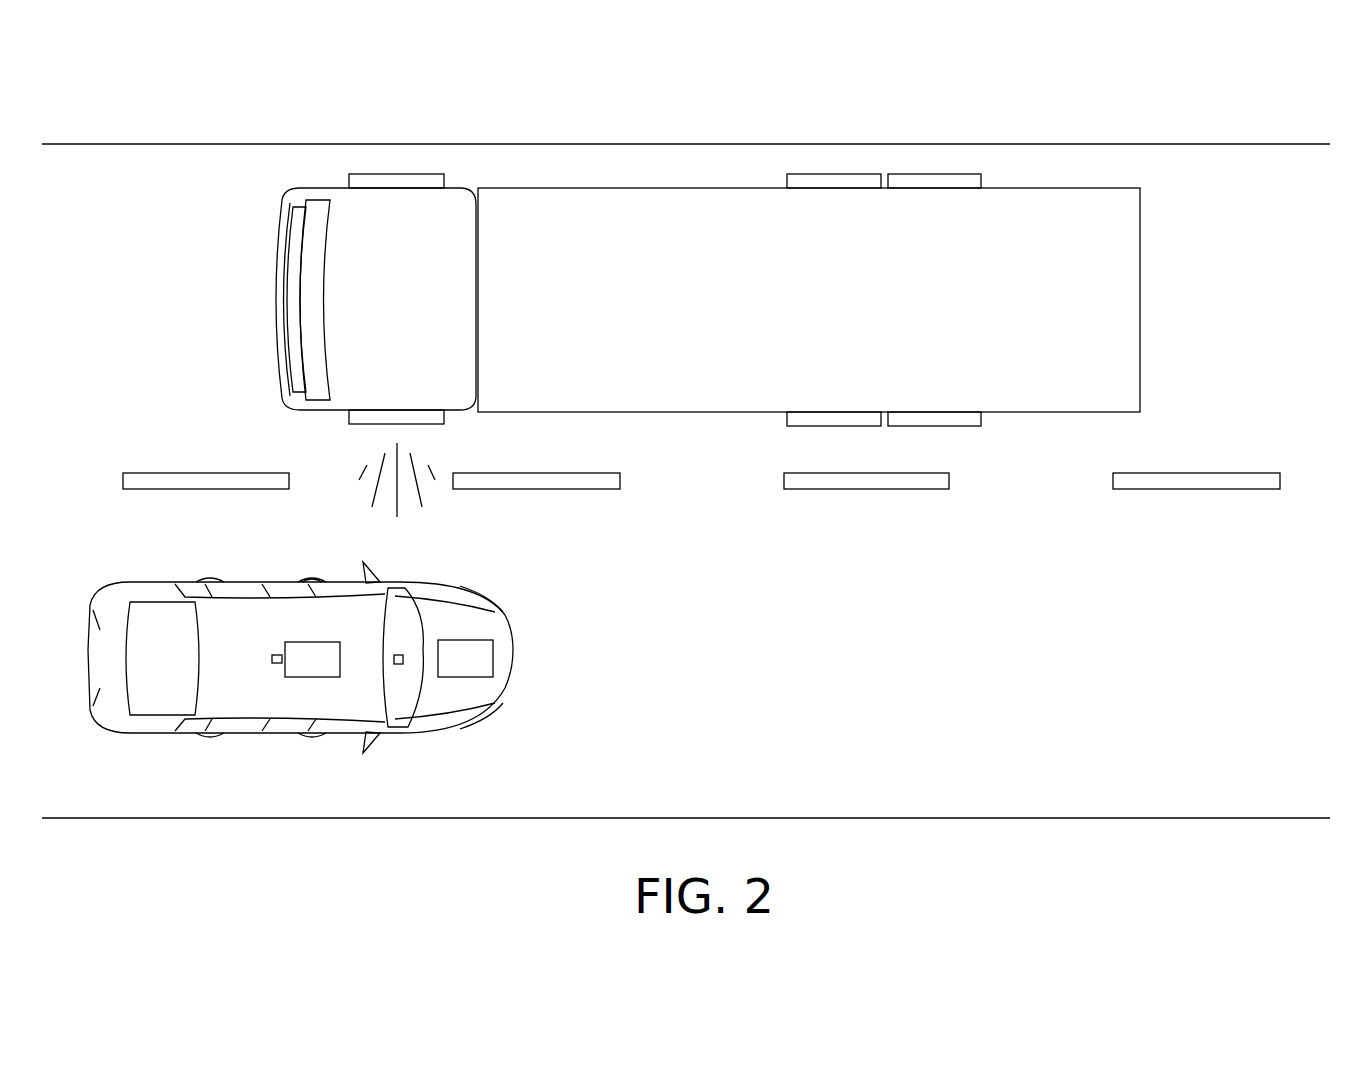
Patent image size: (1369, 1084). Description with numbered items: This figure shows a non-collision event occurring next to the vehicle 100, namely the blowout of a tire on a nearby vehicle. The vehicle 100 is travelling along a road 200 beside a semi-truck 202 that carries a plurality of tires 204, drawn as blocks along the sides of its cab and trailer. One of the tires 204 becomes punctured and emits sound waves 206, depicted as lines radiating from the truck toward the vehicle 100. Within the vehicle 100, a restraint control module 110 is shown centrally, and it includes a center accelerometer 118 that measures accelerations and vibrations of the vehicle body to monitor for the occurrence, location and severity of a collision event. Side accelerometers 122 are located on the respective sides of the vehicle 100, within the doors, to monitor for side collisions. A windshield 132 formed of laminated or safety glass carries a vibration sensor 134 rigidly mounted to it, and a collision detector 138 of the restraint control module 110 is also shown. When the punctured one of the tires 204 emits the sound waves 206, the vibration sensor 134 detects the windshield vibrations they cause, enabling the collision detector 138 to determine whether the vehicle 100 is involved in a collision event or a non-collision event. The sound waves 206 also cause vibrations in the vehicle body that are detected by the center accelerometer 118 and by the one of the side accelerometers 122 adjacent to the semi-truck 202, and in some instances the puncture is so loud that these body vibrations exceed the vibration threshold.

The vehicle 100 is at (112, 722).
The restraint control module 110 is at (312, 659).
The center accelerometer 118 is at (272, 659).
The side accelerometers 122 is at (315, 580).
The windshield 132 is at (400, 708).
The vibration sensor 134 is at (403, 660).
The collision detector 138 is at (465, 658).
The road 200 is at (1158, 819).
The semi-truck 202 is at (283, 198).
The tires 204 is at (402, 174).
The sound waves 206 is at (434, 506).